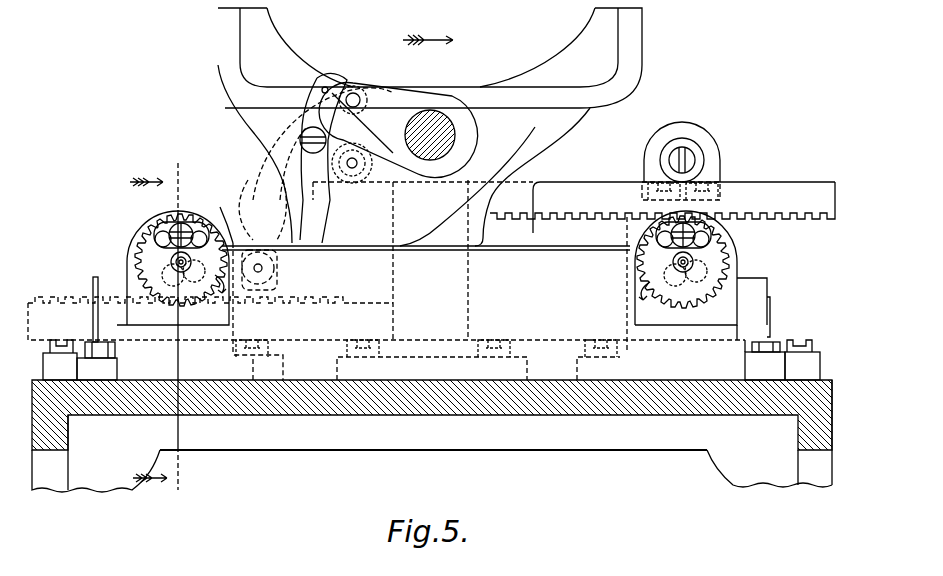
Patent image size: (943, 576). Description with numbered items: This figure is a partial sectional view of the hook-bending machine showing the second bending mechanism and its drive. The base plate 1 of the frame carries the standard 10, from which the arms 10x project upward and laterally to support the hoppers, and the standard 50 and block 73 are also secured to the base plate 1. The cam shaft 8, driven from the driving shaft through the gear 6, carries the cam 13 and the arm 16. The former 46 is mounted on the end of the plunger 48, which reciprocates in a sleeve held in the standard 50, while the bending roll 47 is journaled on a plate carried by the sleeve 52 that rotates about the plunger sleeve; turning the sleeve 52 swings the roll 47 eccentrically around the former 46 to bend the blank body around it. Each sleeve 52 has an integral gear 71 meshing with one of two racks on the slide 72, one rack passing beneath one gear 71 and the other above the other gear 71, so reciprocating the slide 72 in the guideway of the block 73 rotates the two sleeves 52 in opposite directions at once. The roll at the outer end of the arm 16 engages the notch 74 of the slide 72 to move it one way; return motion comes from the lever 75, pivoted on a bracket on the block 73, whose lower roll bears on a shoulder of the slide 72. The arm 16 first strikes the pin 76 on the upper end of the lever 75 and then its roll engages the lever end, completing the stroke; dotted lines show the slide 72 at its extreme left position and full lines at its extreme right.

The base plate 1 is at (348, 400).
The gear 6 is at (157, 328).
The cam shaft 8 is at (452, 141).
The standard 10 is at (477, 100).
The arms 10x is at (218, 14).
The cam 13 is at (408, 84).
The arm 16 is at (357, 94).
The former 46 is at (229, 232).
The bending roll 47 is at (167, 230).
The plunger 48 is at (176, 262).
The standard 50 is at (188, 208).
The sleeve 52 is at (150, 261).
The gear 71 is at (168, 232).
The slide 72 is at (365, 312).
The block 73 is at (216, 362).
The notch 74 is at (513, 200).
The lever 75 is at (308, 117).
The pin 76 is at (324, 88).